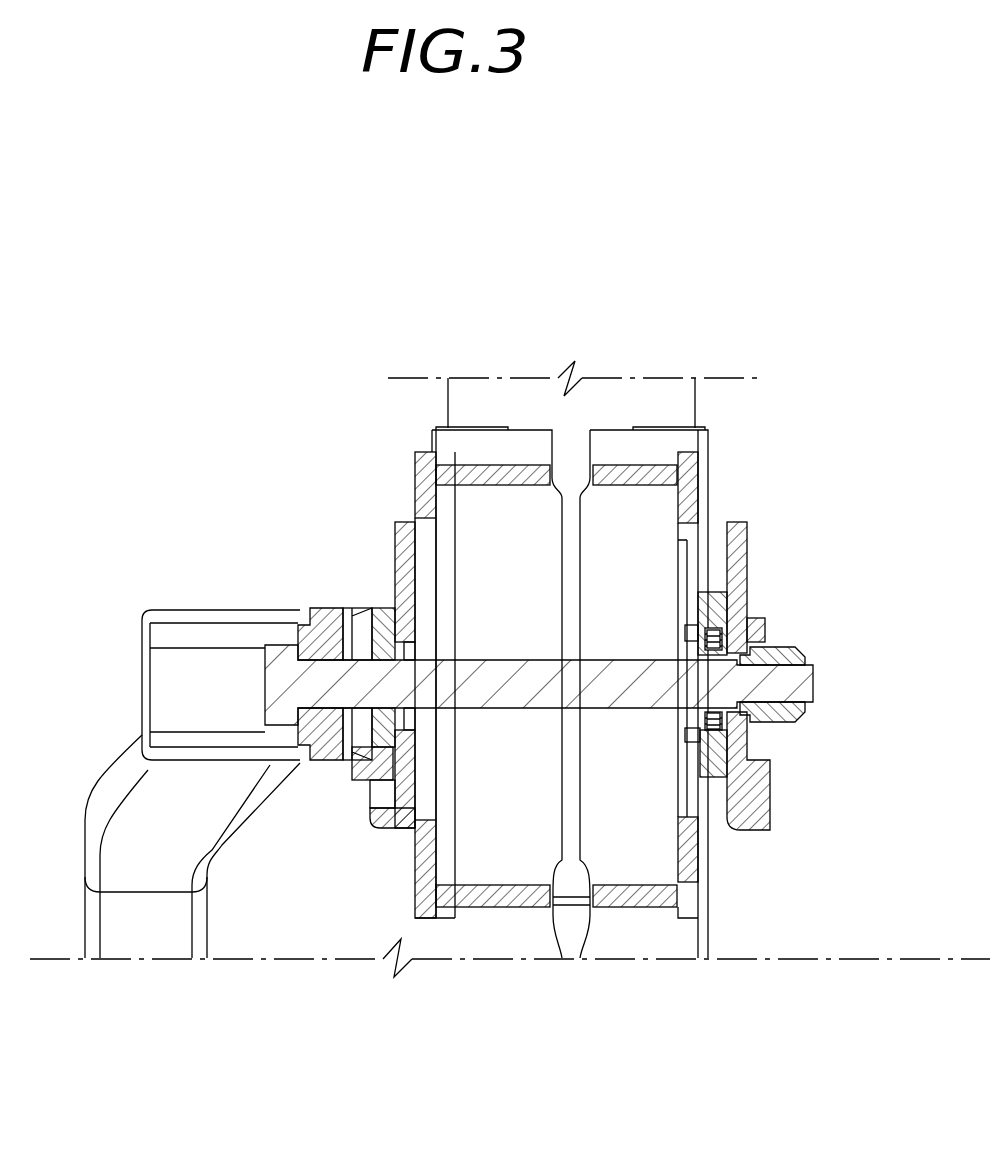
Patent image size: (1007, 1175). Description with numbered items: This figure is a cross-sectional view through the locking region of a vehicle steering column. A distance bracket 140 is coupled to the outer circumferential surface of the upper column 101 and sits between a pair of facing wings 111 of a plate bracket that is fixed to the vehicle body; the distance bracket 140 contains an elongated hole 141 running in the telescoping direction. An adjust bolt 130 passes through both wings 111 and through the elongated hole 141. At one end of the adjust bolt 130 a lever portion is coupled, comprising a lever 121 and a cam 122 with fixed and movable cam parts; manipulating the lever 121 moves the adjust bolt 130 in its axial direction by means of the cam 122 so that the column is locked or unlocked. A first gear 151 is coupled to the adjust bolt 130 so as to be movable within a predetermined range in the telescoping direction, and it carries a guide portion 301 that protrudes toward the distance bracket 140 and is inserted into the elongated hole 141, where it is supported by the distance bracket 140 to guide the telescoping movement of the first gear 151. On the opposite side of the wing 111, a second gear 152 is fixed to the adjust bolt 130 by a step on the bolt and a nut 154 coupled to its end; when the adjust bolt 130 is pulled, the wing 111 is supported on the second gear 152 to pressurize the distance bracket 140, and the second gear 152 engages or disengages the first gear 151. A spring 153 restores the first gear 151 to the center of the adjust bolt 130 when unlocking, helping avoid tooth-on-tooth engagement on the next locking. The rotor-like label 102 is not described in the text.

The upper column 101 is at (495, 940).
The rotor 102 is at (606, 394).
The wings 111 is at (405, 533).
The lever 121 is at (150, 937).
The cam 122 is at (320, 586).
The adjust bolt 130 is at (287, 687).
The distance bracket 140 is at (428, 905).
The elongated hole 141 is at (422, 783).
The first gear 151 is at (705, 603).
The second gear 152 is at (765, 738).
The spring 153 is at (766, 628).
The nut 154 is at (792, 727).
The guide portion 301 is at (722, 626).